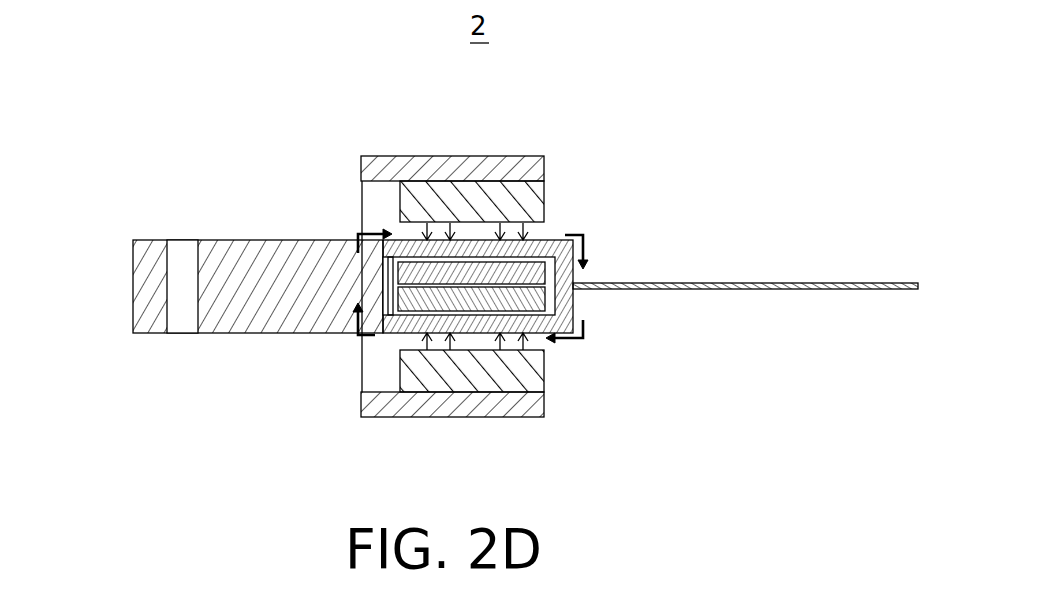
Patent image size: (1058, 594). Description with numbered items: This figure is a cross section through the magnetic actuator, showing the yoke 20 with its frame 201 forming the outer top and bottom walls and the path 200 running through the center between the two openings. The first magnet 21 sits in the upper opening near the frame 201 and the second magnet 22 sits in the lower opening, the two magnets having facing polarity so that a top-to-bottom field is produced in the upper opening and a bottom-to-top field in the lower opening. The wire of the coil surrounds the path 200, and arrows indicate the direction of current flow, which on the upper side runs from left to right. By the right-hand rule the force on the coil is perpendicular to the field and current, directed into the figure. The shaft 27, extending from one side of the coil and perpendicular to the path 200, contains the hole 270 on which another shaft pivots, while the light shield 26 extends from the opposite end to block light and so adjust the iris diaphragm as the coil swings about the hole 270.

The yoke 20 is at (459, 248).
The frame 201 is at (512, 157).
The first magnet 21 is at (505, 205).
The second magnet 22 is at (517, 380).
The light shield 26 is at (793, 283).
The shaft 27 is at (226, 296).
The hole 270 is at (182, 253).
The path 200 is at (513, 295).